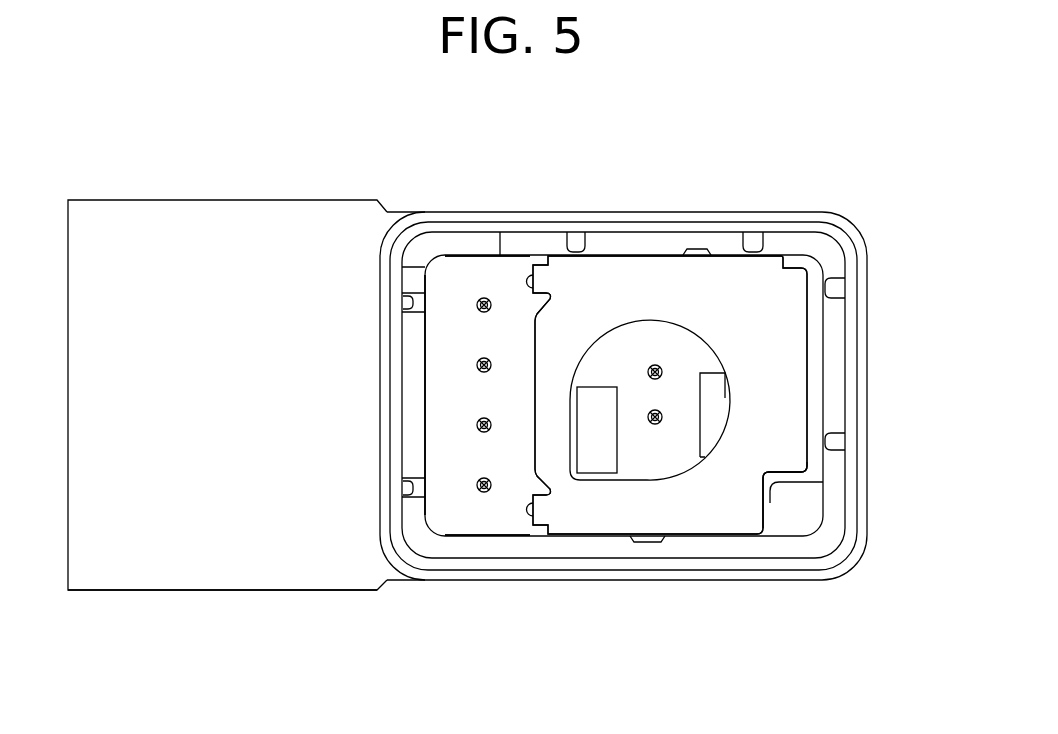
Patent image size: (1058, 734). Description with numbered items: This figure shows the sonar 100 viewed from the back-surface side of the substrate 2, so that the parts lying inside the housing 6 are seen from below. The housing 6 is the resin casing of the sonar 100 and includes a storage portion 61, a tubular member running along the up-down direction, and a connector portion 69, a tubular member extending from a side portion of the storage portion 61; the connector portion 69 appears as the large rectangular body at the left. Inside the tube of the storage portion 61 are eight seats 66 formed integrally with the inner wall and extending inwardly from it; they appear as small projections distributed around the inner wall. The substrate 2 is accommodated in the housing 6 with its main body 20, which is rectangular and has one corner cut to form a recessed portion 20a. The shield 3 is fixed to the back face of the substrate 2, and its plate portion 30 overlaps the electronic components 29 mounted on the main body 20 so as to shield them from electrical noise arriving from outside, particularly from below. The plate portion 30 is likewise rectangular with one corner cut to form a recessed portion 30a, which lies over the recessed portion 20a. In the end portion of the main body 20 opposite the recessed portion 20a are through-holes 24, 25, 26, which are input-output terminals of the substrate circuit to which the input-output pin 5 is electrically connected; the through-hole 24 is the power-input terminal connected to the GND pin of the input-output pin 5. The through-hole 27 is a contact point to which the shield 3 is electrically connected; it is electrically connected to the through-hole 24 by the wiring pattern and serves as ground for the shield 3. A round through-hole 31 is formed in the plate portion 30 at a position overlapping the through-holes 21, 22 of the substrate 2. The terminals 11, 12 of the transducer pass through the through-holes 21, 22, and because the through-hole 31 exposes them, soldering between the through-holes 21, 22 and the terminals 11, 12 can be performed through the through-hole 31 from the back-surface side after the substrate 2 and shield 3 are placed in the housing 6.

The sonar 100 is at (853, 153).
The housing 6 is at (285, 186).
The connector portion 69 is at (218, 603).
The storage portion 61 is at (772, 197).
The seats 66 is at (575, 245).
The shield 3 is at (783, 347).
The plate portion 30 is at (670, 395).
The recessed portion 30a is at (783, 477).
The substrate 2 is at (461, 527).
The main body 20 is at (487, 313).
The recessed portion 20a is at (770, 503).
The through-hole 27 is at (525, 509).
The input-output pin 5 is at (489, 299).
The through-hole 24 is at (483, 493).
The through-hole 25 is at (483, 373).
The through-hole 26 is at (483, 433).
The through-hole 31 is at (666, 327).
The electronic components 29 is at (597, 392).
The terminal 11 is at (662, 370).
The through-hole 21 is at (652, 364).
The terminal 12 is at (662, 417).
The through-hole 22 is at (654, 425).